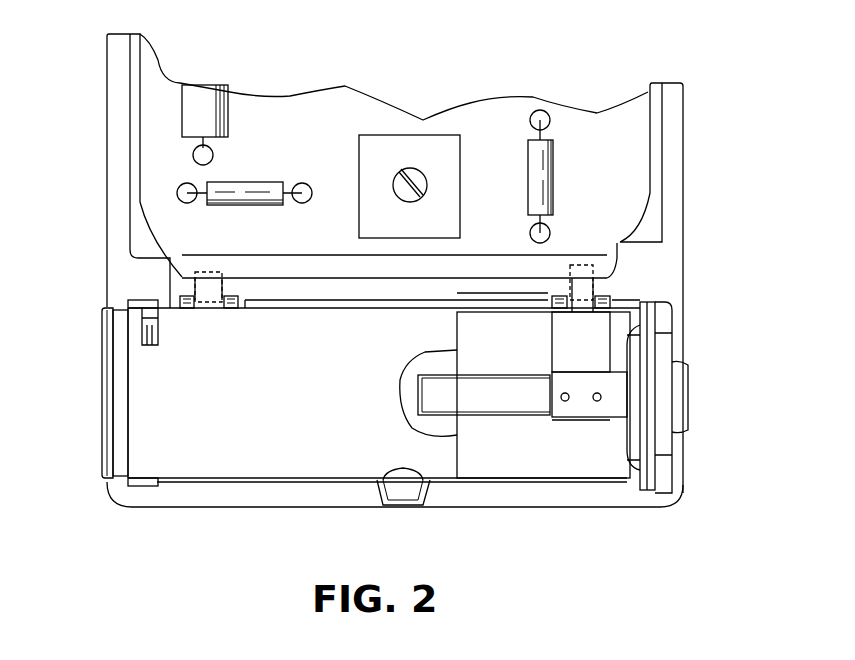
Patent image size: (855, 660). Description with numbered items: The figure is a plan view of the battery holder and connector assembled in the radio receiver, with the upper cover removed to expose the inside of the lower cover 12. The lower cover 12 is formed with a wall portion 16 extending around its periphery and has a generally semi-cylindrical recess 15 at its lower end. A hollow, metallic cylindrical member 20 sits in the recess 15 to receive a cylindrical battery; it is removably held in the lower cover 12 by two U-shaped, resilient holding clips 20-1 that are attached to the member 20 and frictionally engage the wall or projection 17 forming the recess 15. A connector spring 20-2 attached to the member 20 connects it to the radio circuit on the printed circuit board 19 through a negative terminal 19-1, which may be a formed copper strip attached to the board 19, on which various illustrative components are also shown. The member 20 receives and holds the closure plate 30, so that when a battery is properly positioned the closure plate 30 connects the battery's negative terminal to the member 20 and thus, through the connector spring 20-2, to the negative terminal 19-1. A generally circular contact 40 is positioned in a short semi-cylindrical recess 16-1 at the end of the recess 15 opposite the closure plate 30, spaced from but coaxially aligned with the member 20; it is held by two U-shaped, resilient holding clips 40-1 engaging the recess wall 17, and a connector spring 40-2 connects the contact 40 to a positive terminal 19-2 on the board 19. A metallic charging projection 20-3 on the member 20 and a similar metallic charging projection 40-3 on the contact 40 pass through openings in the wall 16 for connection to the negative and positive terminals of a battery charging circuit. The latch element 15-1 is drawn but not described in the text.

The lower cover 12 is at (700, 143).
The wall portion 16 is at (117, 123).
The short semi-cylindrical recess 16-1 is at (665, 465).
The printed circuit board 19 is at (325, 108).
The negative terminal 19-1 is at (325, 258).
The positive terminal 19-2 is at (500, 258).
The wall or projection 17 is at (290, 305).
The hollow metallic cylindrical member 20 is at (238, 460).
The U-shaped resilient holding clips 20-1 is at (230, 312).
The connector spring 20-2 is at (218, 278).
The metallic charging projection 20-3 is at (408, 493).
The semi-cylindrical recess 15 is at (518, 459).
The latch bar 15-1 is at (500, 388).
The closure plate 30 is at (98, 377).
The circular contact 40 is at (672, 350).
The U-shaped resilient holding clips 40-1 is at (560, 314).
The connector spring 40-2 is at (597, 296).
The metallic charging projection 40-3 is at (685, 390).